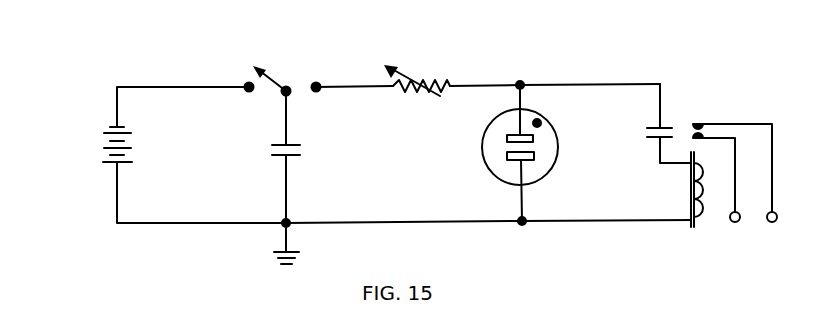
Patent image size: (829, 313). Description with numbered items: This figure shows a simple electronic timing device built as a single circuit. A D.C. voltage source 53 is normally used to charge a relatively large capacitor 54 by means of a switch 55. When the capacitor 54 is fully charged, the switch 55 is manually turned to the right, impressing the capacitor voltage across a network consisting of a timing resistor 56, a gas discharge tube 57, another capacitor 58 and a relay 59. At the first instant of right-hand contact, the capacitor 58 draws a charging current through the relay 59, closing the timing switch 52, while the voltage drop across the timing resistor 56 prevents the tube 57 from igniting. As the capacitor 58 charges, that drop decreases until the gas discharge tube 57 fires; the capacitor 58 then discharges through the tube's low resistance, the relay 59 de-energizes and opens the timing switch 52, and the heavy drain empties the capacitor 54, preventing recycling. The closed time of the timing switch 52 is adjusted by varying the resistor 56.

The timing switch 52 is at (702, 124).
The D.C. voltage source 53 is at (104, 148).
The capacitor 54 is at (290, 157).
The switch 55 is at (258, 68).
The timing resistor 56 is at (421, 82).
The gas discharge tube 57 is at (510, 160).
The capacitor 58 is at (647, 128).
The relay 59 is at (700, 215).